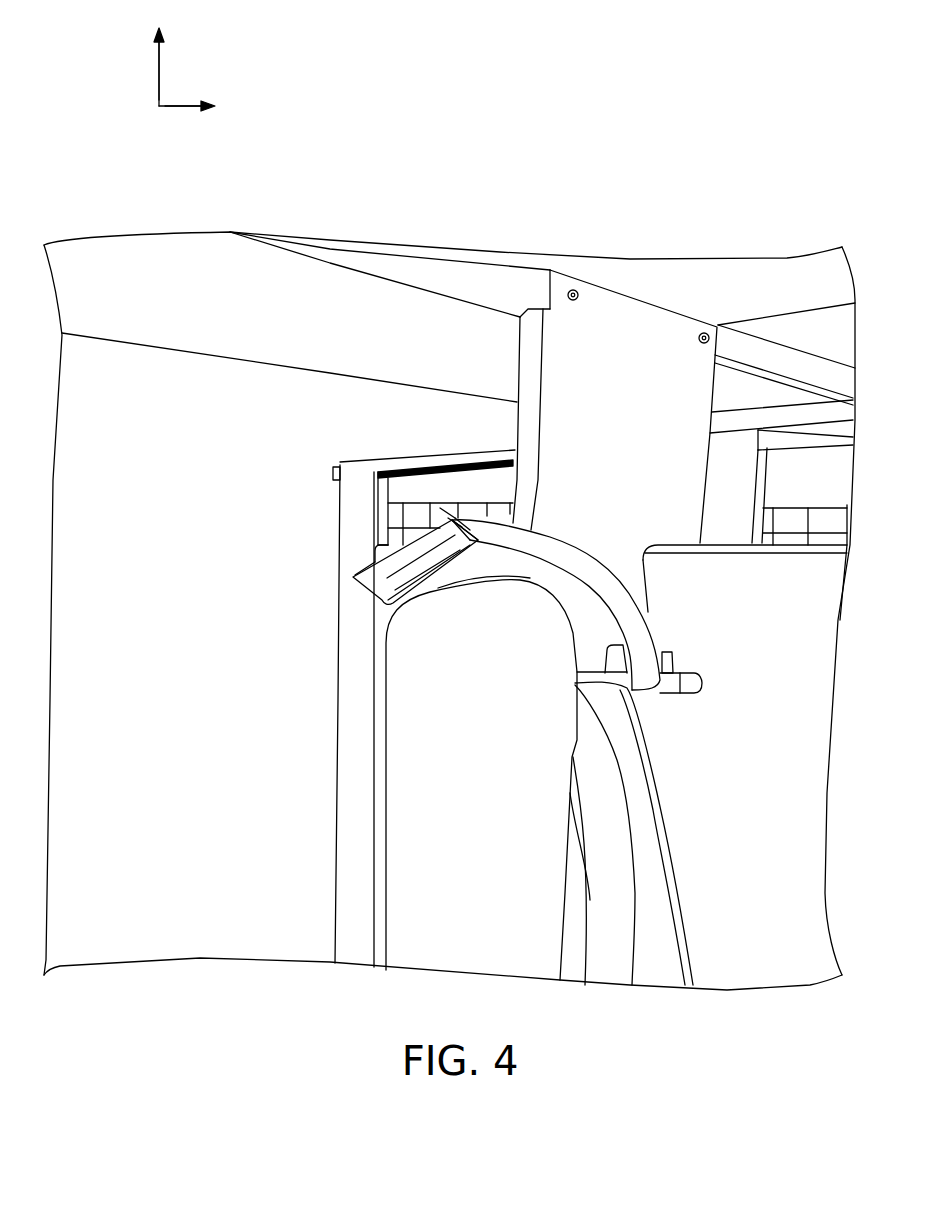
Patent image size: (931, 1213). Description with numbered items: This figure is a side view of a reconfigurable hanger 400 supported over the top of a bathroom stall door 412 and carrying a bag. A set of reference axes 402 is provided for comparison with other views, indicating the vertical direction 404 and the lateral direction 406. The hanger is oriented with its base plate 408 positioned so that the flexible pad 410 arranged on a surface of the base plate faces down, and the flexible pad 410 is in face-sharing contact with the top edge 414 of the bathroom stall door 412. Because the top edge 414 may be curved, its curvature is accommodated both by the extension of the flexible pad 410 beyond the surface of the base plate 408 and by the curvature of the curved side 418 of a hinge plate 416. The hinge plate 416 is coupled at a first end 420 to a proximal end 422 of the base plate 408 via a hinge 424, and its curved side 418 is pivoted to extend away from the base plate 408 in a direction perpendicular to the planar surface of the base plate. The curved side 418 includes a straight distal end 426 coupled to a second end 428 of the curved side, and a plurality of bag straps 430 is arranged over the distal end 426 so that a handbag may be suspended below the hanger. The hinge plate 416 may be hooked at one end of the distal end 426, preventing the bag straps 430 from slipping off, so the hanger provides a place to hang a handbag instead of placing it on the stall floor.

The reconfigurable hanger 400 is at (592, 495).
The set of reference axes 402 is at (197, 80).
The vertical direction 404 is at (156, 47).
The lateral direction 406 is at (170, 108).
The base plate 408 is at (382, 540).
The flexible pad 410 is at (427, 575).
The bathroom stall door 412 is at (363, 708).
The top edge 414 is at (493, 575).
The hinge plate 416 is at (663, 602).
The curved side 418 is at (578, 565).
The first end 420 is at (455, 518).
The proximal end 422 is at (440, 508).
The hinge 424 is at (448, 518).
The distal end 426 is at (640, 695).
The second end 428 is at (655, 667).
The bag straps 430 is at (615, 792).